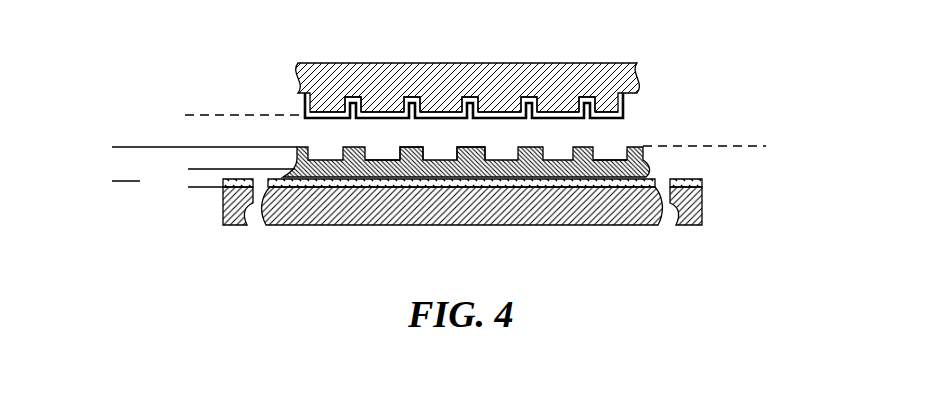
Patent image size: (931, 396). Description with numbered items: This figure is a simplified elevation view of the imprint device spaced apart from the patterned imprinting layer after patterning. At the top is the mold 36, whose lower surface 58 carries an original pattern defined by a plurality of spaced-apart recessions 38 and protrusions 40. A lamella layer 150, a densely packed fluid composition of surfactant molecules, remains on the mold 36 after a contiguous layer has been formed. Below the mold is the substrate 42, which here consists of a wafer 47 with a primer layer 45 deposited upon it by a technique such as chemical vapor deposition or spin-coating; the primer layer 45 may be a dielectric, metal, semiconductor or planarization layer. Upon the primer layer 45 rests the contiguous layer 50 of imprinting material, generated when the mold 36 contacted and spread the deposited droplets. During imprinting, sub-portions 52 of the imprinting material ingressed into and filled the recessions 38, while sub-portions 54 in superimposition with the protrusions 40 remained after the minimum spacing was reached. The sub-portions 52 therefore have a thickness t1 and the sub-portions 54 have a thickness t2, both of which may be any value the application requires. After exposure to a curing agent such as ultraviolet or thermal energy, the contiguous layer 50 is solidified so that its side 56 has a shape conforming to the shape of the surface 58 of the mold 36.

The mold 36 is at (637, 62).
The recessions 38 is at (412, 98).
The protrusions 40 is at (502, 105).
The lamella layer 150 is at (625, 117).
The surface of mold 58 is at (222, 115).
The side of contiguous layer 56 is at (766, 146).
The contiguous layer 50 is at (643, 154).
The sub-portions of imprinting material 52 is at (470, 150).
The sub-portions of imprinting material 54 is at (612, 160).
The primer layer 45 is at (655, 181).
The wafer 47 is at (329, 216).
The substrate 42 is at (218, 190).
The thickness of sub-portions 52 t1 is at (105, 146).
The thickness of sub-portions 54 t2 is at (186, 168).